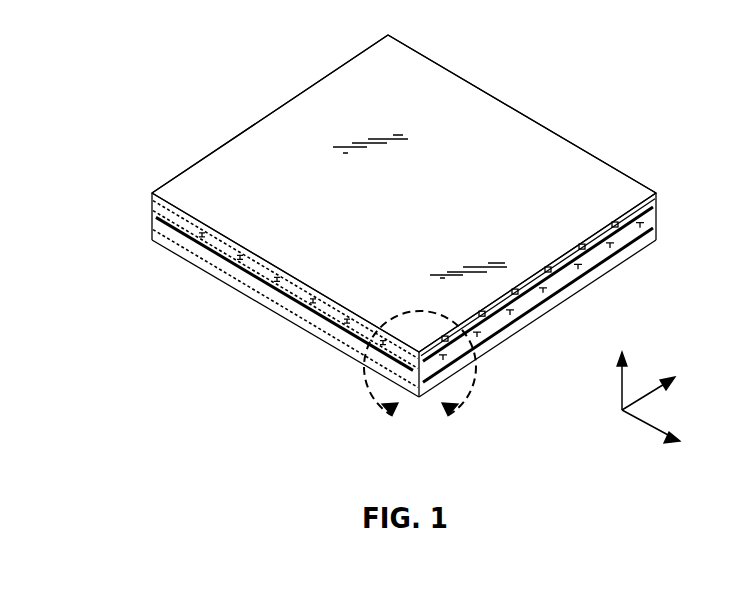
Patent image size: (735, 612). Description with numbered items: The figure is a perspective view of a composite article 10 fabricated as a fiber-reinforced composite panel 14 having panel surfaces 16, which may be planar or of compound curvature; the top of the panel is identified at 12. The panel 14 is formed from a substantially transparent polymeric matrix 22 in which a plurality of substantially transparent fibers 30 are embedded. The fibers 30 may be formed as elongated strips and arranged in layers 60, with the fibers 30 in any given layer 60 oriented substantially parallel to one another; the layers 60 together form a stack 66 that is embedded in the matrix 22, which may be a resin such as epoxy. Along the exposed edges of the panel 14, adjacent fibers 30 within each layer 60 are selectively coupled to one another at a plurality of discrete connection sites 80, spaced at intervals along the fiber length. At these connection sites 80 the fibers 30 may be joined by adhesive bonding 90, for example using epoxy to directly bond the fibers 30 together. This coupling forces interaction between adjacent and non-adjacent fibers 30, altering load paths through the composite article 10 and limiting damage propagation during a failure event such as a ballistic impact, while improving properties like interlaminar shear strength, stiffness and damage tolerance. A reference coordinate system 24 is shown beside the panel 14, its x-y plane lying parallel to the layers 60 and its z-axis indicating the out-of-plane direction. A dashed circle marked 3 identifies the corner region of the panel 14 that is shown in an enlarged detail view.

The composite article 10 is at (193, 165).
The top surface 12 is at (343, 87).
The fiber-reinforced composite panel 14 is at (425, 63).
The panel surfaces 16 is at (470, 103).
The polymeric matrix 22 is at (232, 282).
The reference coordinate system 24 is at (626, 414).
The fibers 30 is at (200, 237).
The layers 60 is at (653, 234).
The stack 66 is at (648, 242).
The connection sites 80 is at (292, 289).
The adhesive bonding 90 is at (337, 334).
The detail view reference 3 is at (420, 372).